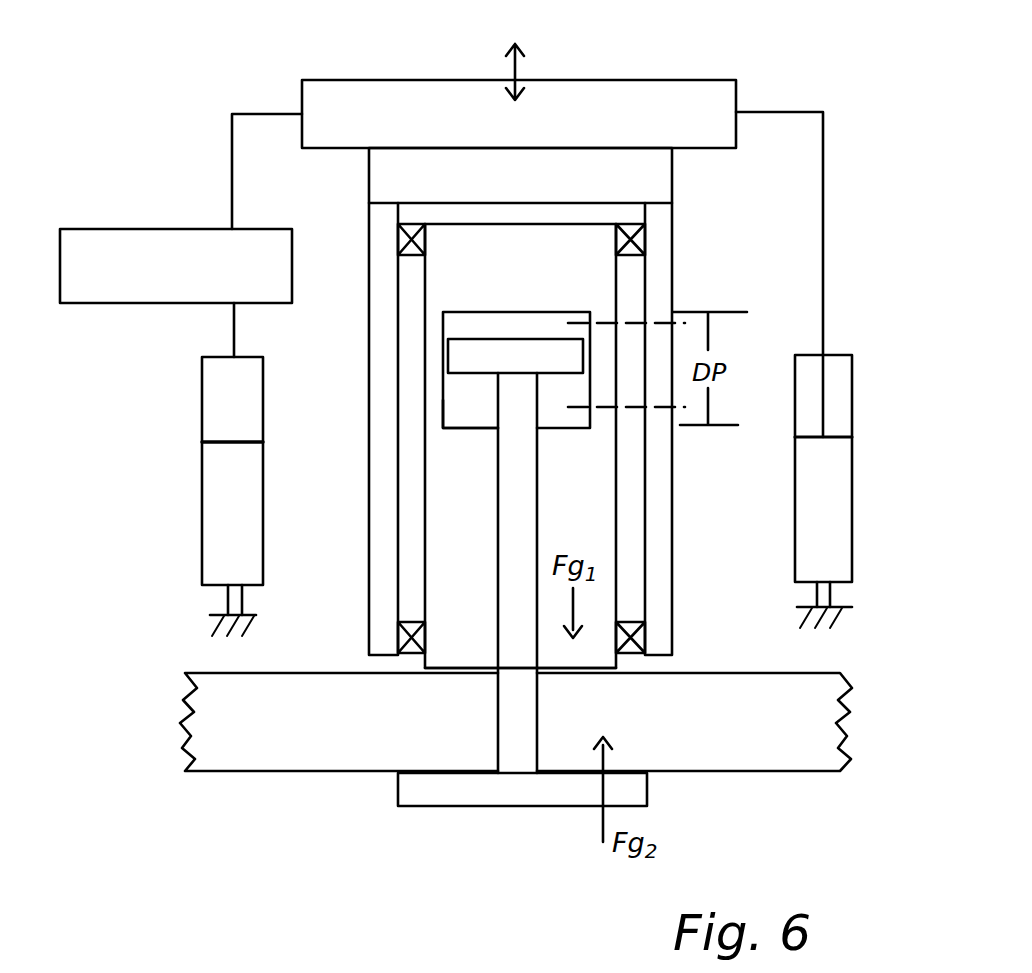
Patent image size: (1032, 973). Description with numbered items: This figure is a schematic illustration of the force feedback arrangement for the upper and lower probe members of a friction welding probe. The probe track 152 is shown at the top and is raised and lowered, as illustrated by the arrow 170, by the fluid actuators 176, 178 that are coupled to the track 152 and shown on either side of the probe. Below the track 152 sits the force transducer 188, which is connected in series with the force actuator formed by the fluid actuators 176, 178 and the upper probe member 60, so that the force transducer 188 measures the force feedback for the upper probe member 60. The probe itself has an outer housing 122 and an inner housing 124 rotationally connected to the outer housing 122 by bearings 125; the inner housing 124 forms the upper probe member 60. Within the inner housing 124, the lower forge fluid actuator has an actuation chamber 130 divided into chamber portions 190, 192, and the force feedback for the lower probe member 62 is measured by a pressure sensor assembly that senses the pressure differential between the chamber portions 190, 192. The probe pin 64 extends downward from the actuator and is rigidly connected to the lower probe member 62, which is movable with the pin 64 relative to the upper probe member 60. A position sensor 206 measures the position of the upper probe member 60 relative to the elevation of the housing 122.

The probe track 152 is at (630, 95).
The arrow 170 is at (512, 67).
The force transducer 188 is at (385, 172).
The outer housing 122 is at (660, 250).
The bearings 125 is at (638, 237).
The inner housing 124 is at (550, 283).
The upper probe member 60 is at (473, 630).
The actuation chamber 130 is at (477, 395).
The chamber portion 190 is at (458, 322).
The chamber portion 192 is at (466, 416).
The probe pin 64 is at (520, 707).
The lower probe member 62 is at (452, 795).
The position sensor 206 is at (150, 227).
The fluid actuator 176 is at (201, 434).
The fluid actuator 178 is at (860, 456).